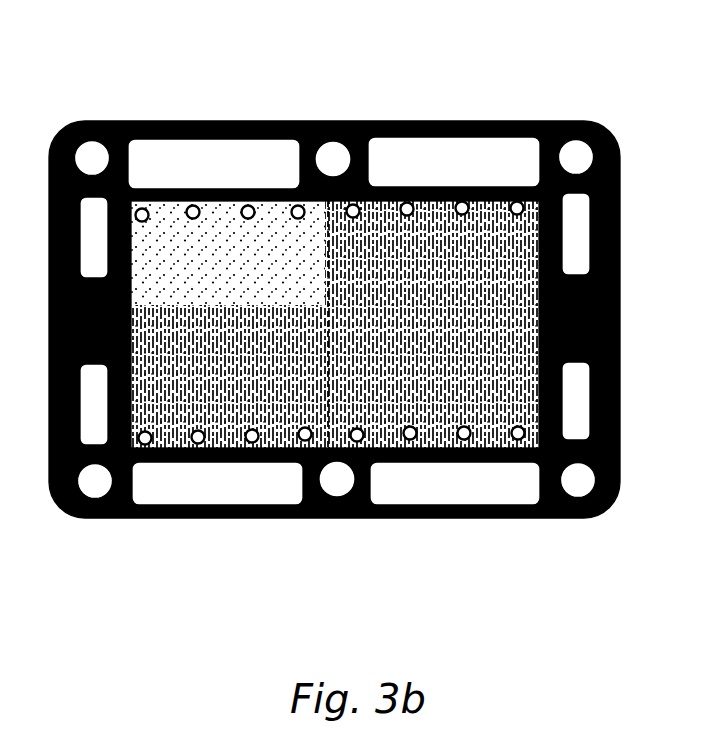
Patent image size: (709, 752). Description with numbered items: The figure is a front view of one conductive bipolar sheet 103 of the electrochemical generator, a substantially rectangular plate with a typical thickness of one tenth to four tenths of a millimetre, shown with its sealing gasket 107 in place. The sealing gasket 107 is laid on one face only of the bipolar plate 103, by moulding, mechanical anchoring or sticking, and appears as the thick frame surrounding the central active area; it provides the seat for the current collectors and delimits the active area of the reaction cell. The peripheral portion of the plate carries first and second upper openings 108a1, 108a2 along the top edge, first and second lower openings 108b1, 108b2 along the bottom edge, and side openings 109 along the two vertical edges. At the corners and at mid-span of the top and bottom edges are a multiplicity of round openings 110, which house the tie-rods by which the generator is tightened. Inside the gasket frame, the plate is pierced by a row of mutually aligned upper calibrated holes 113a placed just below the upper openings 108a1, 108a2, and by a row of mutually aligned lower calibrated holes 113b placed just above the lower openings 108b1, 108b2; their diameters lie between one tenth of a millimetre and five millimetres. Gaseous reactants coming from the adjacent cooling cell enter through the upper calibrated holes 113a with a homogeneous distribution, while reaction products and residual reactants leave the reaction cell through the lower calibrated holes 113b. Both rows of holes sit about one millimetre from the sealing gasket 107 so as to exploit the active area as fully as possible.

The conductive bipolar sheet 103 is at (339, 317).
The sealing gasket 107 is at (430, 118).
The first upper opening 108a1 is at (146, 160).
The second upper opening 108a2 is at (379, 158).
The first lower opening 108b1 is at (195, 495).
The second lower opening 108b2 is at (440, 495).
The side opening 109 is at (573, 240).
The opening for housing tie-rods 110 is at (95, 490).
The upper calibrated hole 113a is at (195, 190).
The lower calibrated hole 113b is at (253, 443).